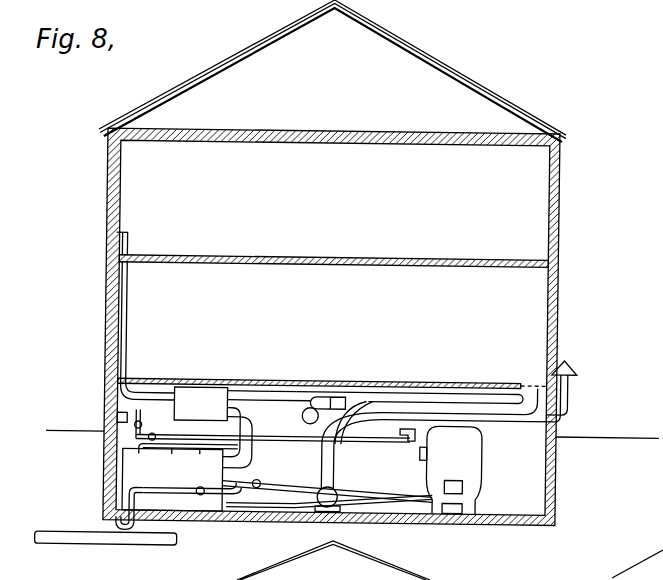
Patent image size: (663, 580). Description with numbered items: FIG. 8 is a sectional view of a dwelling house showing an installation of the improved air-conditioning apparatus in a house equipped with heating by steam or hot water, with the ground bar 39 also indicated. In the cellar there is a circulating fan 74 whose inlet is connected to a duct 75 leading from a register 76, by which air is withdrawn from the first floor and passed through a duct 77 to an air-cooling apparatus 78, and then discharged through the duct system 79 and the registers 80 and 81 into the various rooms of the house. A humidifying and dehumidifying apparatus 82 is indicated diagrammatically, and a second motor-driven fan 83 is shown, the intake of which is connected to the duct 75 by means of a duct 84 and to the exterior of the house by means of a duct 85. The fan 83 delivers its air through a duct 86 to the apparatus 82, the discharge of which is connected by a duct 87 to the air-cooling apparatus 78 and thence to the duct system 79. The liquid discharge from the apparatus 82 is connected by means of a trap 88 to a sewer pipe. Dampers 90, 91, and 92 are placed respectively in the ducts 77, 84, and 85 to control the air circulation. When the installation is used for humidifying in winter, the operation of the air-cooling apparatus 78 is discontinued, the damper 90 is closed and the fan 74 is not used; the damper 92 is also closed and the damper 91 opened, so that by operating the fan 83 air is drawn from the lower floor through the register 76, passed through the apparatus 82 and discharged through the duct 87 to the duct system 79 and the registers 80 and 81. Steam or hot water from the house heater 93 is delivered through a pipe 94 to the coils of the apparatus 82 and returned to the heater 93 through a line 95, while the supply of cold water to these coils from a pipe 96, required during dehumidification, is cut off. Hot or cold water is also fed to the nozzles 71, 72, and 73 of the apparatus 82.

The ground bar 39 is at (152, 542).
The nozzle 71 is at (149, 451).
The nozzle 72 is at (172, 451).
The nozzle 73 is at (204, 451).
The circulating fan 74 is at (311, 411).
The duct 75 is at (437, 400).
The register 76 is at (531, 382).
The duct 77 is at (258, 394).
The air-cooling apparatus 78 is at (199, 399).
The duct system 79 is at (133, 392).
The register 80 is at (130, 365).
The register 81 is at (130, 247).
The humidifying and dehumidifying apparatus 82 is at (131, 470).
The second motor-driven fan 83 is at (343, 490).
The duct 84 is at (344, 415).
The duct 85 is at (412, 417).
The duct 86 is at (282, 503).
The duct 87 is at (253, 426).
The trap 88 is at (140, 526).
The damper 90 is at (305, 392).
The damper 91 is at (324, 434).
The damper 92 is at (394, 421).
The house heater 93 is at (474, 457).
The pipe 94 is at (169, 430).
The line 95 is at (253, 498).
The pipe 96 is at (124, 415).